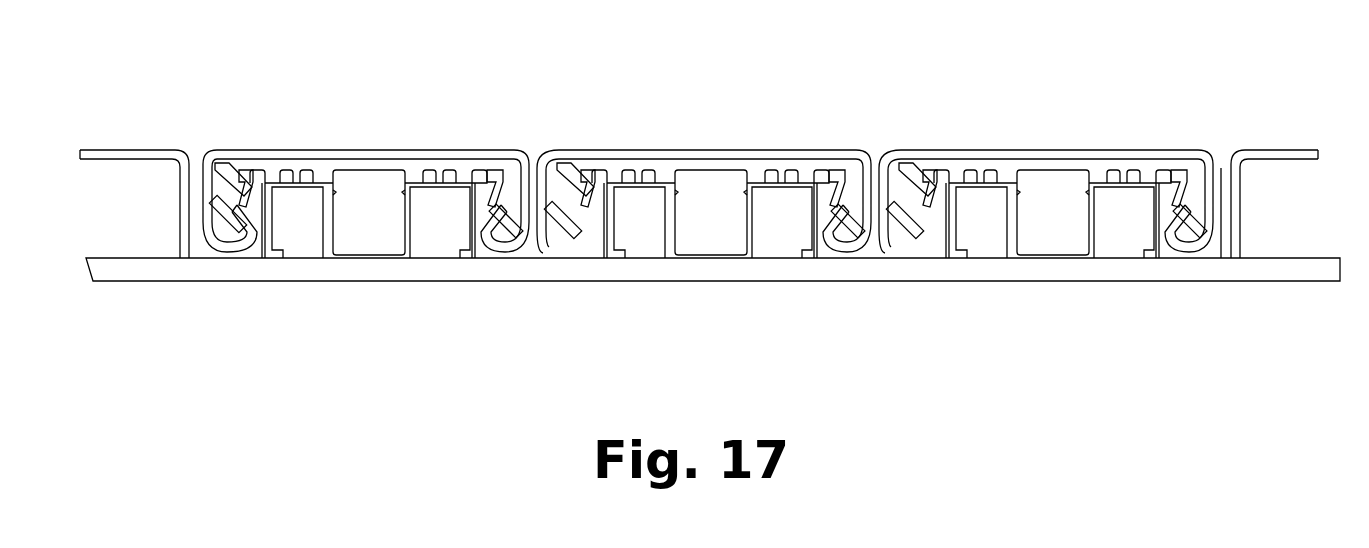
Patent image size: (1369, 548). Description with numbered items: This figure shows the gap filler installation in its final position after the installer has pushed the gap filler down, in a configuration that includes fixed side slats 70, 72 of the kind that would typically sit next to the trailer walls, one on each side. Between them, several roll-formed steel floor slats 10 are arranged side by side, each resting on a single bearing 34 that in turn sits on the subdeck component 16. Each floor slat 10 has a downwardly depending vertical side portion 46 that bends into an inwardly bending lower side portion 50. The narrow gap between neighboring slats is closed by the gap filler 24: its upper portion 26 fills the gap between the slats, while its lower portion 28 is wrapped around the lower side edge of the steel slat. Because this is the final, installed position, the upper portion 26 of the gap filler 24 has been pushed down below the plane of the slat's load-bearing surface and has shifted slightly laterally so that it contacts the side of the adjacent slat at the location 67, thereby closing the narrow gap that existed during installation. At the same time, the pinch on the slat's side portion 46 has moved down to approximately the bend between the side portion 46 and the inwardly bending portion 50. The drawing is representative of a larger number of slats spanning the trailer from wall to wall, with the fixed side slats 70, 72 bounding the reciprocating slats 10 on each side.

The floor slat 10 is at (410, 147).
The subdeck component 16 is at (340, 257).
The gap filler 24 is at (870, 253).
The upper portion of the gap filler 26 is at (562, 188).
The lower portion of the gap filler 28 is at (522, 262).
The single bearing 34 is at (318, 150).
The vertical side portion 46 is at (843, 153).
The inwardly bending lower side portion 50 is at (857, 220).
The contact with side of adjacent slat 67 is at (568, 175).
The fixed side slat 70 is at (143, 150).
The fixed side slat 72 is at (1283, 153).